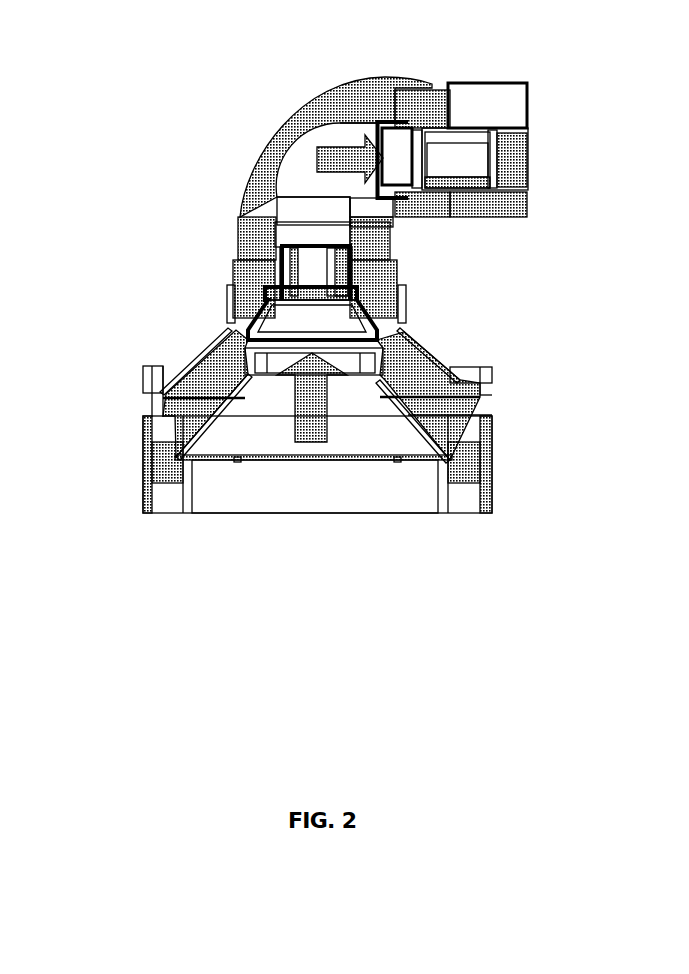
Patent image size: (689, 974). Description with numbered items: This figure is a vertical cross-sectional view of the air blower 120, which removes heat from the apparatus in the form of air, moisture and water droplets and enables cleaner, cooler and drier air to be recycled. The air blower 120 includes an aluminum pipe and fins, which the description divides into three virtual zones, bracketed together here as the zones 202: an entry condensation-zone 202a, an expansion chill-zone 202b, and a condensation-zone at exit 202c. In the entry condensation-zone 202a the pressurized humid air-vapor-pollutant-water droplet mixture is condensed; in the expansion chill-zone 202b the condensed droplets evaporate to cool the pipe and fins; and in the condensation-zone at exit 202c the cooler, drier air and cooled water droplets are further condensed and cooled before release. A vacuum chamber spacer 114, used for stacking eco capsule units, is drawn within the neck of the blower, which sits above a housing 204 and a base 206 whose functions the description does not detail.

The air blower 120 is at (97, 662).
The gas delivery assembly 202 is at (150, 85).
The entry condensation-zone 202a is at (277, 270).
The expansion chill-zone 202b is at (350, 130).
The condensation-zone at exit 202c is at (455, 173).
The vacuum chamber spacer 114 is at (332, 268).
The housing 204 is at (415, 375).
The base 206 is at (347, 480).